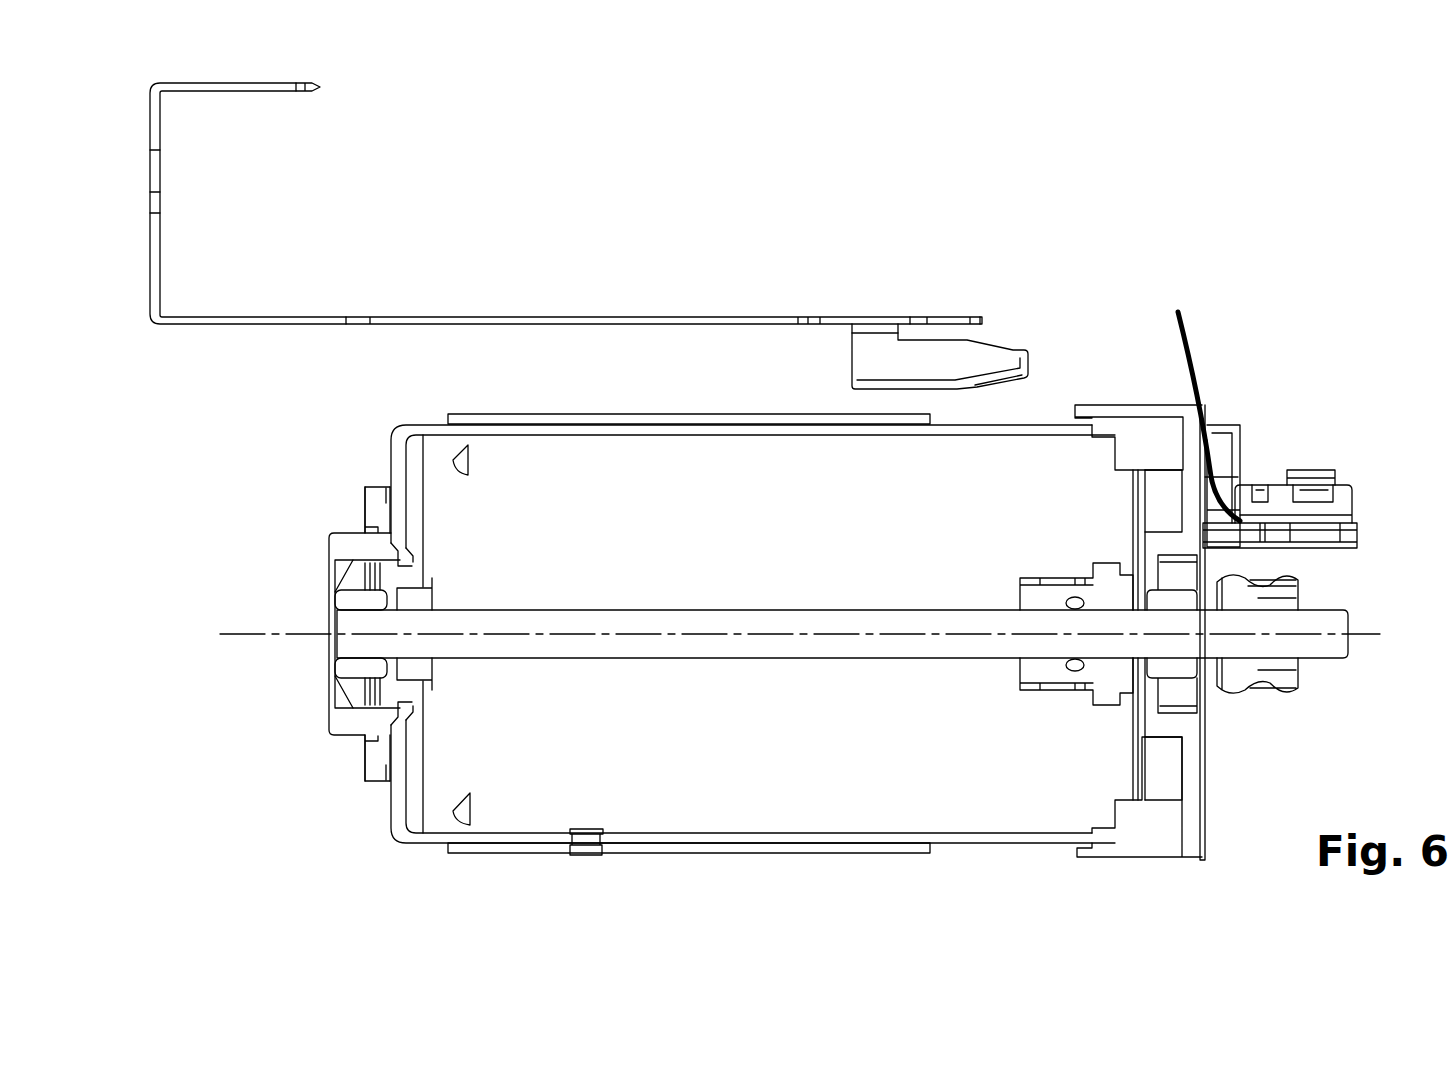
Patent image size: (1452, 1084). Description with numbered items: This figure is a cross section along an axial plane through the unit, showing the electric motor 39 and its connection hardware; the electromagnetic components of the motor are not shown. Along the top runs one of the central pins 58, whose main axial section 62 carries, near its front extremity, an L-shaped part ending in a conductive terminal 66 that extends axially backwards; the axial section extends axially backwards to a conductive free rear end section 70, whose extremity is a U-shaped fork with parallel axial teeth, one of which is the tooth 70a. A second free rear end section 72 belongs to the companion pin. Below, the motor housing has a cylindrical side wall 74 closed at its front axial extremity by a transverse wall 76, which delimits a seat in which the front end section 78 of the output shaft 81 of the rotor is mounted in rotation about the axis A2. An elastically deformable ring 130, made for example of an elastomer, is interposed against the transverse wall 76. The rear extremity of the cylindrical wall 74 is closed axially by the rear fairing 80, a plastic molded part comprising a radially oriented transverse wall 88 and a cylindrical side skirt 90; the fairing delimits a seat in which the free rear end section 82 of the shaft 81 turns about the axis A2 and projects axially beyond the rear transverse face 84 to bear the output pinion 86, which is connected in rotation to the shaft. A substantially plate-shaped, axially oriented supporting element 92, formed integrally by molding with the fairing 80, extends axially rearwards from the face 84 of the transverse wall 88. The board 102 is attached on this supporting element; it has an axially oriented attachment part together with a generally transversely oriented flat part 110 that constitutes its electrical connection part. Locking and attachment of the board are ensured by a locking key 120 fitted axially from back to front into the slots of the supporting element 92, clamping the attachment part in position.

The motor 39 is at (700, 865).
The central pins 58 is at (465, 318).
The main axial section 62 is at (592, 316).
The conductive terminal 66 is at (280, 88).
The free rear end section 70 is at (942, 318).
The axial tooth 70a is at (982, 321).
The free rear end section 72 is at (891, 372).
The cylindrical side wall 74 is at (960, 838).
The transverse wall 76 is at (398, 757).
The front end section 78 is at (352, 623).
The rear fairing 80 is at (1165, 868).
The output shaft 81 is at (690, 597).
The free rear end section 82 is at (1183, 640).
The rear transverse face 84 is at (1208, 821).
The output pinion 86 is at (1285, 600).
The transverse wall 88 is at (1192, 498).
The cylindrical side skirt 90 is at (1100, 405).
The supporting element 92 is at (1373, 538).
The board 102 is at (1222, 402).
The flat part 110 is at (1192, 325).
The locking key 120 is at (1340, 516).
The elastically deformable ring 130 is at (347, 500).
The axis A2 is at (1376, 640).